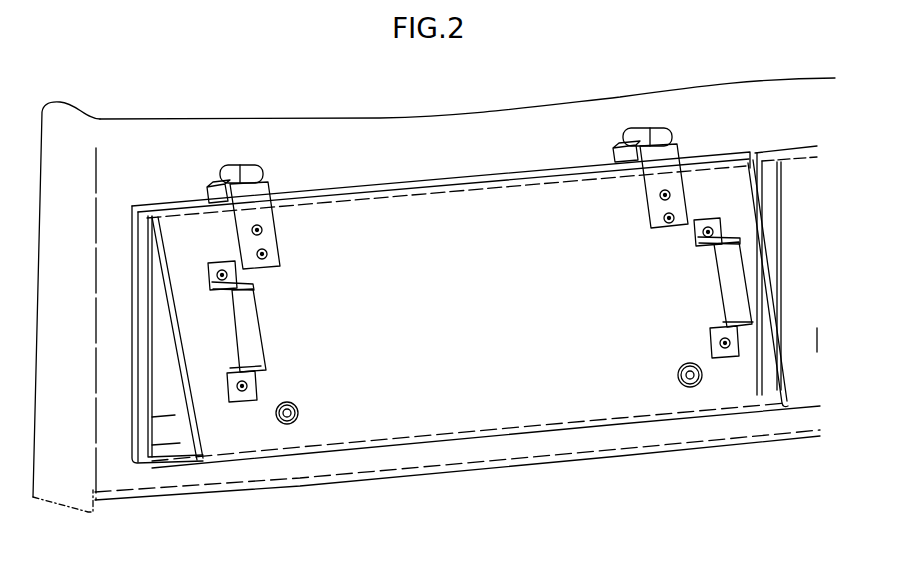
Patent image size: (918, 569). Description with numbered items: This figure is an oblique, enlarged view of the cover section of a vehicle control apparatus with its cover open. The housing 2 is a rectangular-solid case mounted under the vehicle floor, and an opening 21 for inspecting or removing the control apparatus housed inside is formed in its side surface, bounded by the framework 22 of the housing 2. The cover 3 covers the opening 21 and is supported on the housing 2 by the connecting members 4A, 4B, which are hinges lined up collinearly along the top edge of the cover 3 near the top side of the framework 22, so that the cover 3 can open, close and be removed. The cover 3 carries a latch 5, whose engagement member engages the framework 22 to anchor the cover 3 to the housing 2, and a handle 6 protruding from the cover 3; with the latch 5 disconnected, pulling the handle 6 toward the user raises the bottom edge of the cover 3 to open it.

The housing 2 is at (613, 433).
The cover 3 is at (517, 408).
The connecting member 4A is at (214, 176).
The connecting member 4B is at (624, 142).
The latch 5 is at (293, 421).
The handle 6 is at (250, 352).
The opening 21 is at (163, 440).
The framework 22 is at (140, 349).